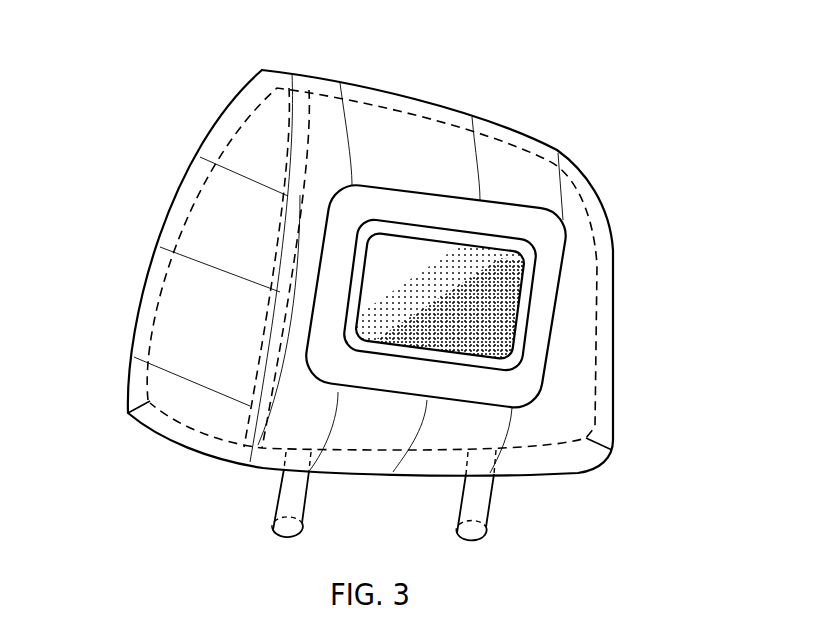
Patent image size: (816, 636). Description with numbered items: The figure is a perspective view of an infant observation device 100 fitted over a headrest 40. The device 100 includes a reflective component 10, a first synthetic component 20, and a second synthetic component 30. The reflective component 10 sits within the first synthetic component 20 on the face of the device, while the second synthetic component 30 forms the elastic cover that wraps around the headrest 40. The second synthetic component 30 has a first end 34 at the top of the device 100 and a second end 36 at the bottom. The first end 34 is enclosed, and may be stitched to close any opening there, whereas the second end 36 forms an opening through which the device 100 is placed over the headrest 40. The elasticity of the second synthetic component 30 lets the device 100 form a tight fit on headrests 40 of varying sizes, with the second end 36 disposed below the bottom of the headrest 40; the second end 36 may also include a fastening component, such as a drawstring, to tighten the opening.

The infant observation device 100 is at (667, 112).
The reflective component 10 is at (505, 275).
The first synthetic component 20 is at (560, 315).
The second synthetic component 30 is at (140, 298).
The first end 34 is at (262, 70).
The second end 36 is at (258, 467).
The headrest 40 is at (180, 421).